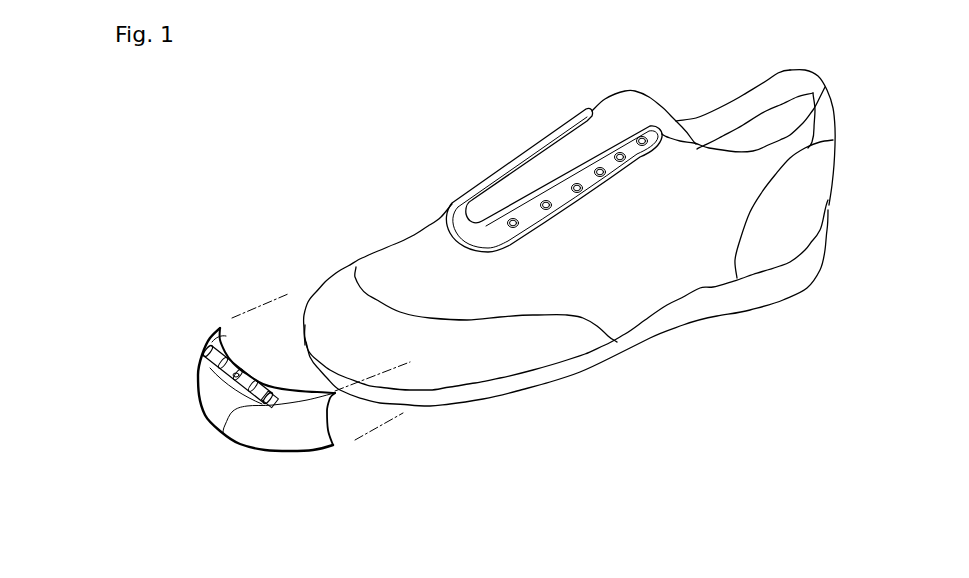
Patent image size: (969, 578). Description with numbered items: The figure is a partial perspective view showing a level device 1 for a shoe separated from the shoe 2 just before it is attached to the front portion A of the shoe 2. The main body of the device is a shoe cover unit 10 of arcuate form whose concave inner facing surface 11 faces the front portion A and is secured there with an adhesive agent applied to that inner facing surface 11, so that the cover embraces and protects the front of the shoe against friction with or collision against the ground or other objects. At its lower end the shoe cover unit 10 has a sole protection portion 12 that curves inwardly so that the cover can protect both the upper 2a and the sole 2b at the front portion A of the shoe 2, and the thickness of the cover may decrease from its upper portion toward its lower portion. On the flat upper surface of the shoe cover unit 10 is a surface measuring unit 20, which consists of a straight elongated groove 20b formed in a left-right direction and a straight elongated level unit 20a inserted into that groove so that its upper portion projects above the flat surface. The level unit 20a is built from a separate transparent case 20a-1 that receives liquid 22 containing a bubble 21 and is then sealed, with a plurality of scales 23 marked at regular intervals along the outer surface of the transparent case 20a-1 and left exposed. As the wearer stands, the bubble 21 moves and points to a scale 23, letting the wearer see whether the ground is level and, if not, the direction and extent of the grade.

The level device for a shoe 1 is at (253, 461).
The shoe 2 is at (453, 197).
The upper 2a is at (545, 355).
The sole 2b is at (597, 360).
The shoe cover unit 10 is at (295, 455).
The inner facing surface 11 is at (333, 417).
The sole protection portion 12 is at (320, 453).
The surface measuring unit 20 is at (211, 372).
The level unit 20a is at (240, 238).
The transparent case 20a-1 is at (203, 347).
The straight elongated groove 20b is at (253, 395).
The bubble 21 is at (236, 372).
The liquid 22 is at (267, 387).
The scales 23 is at (210, 338).
The front portion A is at (320, 345).